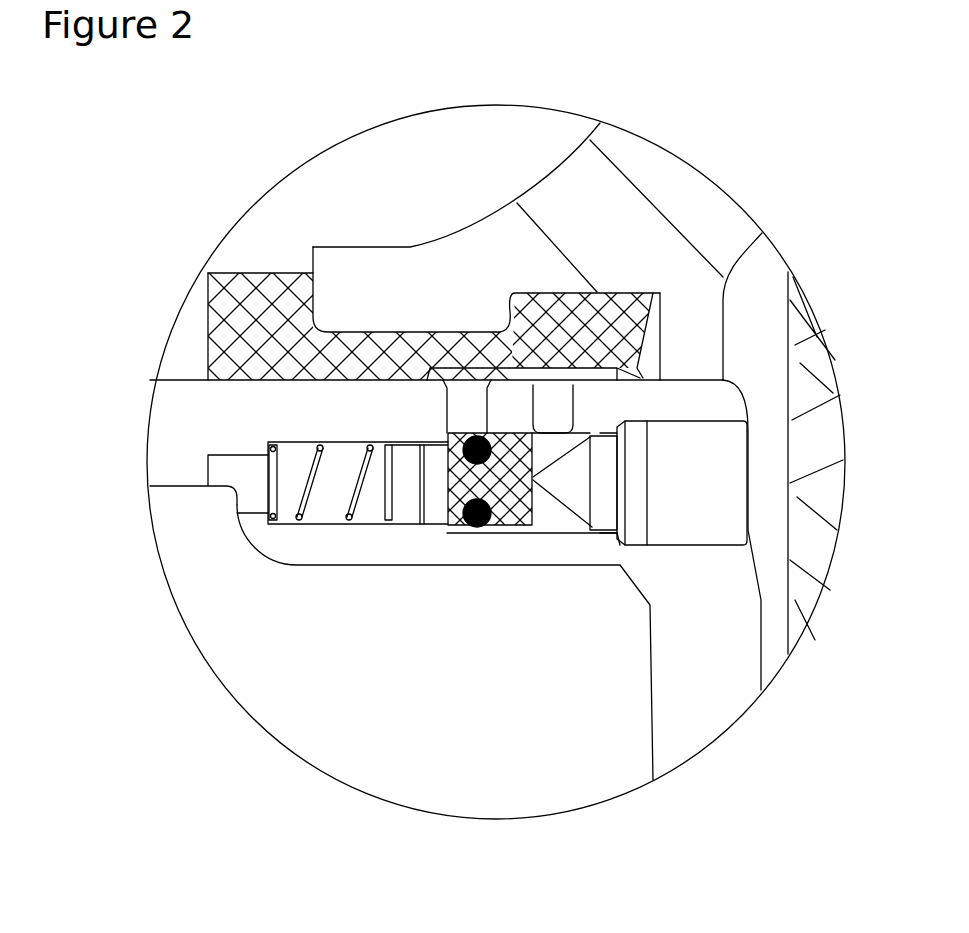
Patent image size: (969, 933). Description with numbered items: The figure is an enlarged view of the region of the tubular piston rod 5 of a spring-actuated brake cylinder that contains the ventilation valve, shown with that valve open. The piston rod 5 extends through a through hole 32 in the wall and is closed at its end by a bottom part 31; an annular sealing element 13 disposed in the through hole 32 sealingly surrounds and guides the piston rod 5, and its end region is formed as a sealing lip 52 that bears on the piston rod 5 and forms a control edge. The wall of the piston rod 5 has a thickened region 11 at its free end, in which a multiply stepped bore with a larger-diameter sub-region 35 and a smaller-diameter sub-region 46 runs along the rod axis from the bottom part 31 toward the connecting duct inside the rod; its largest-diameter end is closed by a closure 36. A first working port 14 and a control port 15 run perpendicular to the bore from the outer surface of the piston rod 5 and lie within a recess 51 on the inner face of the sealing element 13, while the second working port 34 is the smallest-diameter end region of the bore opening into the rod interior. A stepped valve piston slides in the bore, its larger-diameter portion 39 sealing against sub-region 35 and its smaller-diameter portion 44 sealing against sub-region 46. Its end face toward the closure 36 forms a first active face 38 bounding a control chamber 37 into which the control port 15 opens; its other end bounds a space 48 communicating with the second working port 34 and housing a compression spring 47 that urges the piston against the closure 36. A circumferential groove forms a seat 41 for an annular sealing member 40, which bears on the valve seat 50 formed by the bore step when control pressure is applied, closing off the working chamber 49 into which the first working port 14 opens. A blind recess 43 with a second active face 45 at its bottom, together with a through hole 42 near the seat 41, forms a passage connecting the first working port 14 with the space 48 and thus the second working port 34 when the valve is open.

The piston rod 5 is at (180, 395).
The thickened region 11 is at (332, 548).
The annular sealing element 13 is at (452, 475).
The first working port 14 is at (468, 372).
The control port 15 is at (553, 412).
The bottom part 31 is at (723, 683).
The through hole 32 is at (733, 223).
The second working port 34 is at (232, 476).
The sub-region of stepped bore having the larger diameter 35 is at (557, 533).
The closure 36 is at (713, 497).
The control chamber 37 is at (647, 420).
The first active face 38 is at (590, 528).
The portion of valve piston having the larger diameter 39 is at (517, 527).
The annular sealing member 40 is at (480, 527).
The seat 41 is at (477, 445).
The through hole 42 is at (262, 275).
The recess 43 is at (395, 528).
The portion of valve piston having the smaller diameter 44 is at (435, 480).
The second active face 45 is at (432, 510).
The sub-region of stepped bore having the smaller diameter 46 is at (318, 522).
The compression spring 47 is at (300, 492).
The space 48 is at (268, 458).
The working chamber 49 is at (452, 530).
The valve seat 50 is at (452, 447).
The recess 51 is at (520, 330).
The sealing lip 52 is at (643, 370).